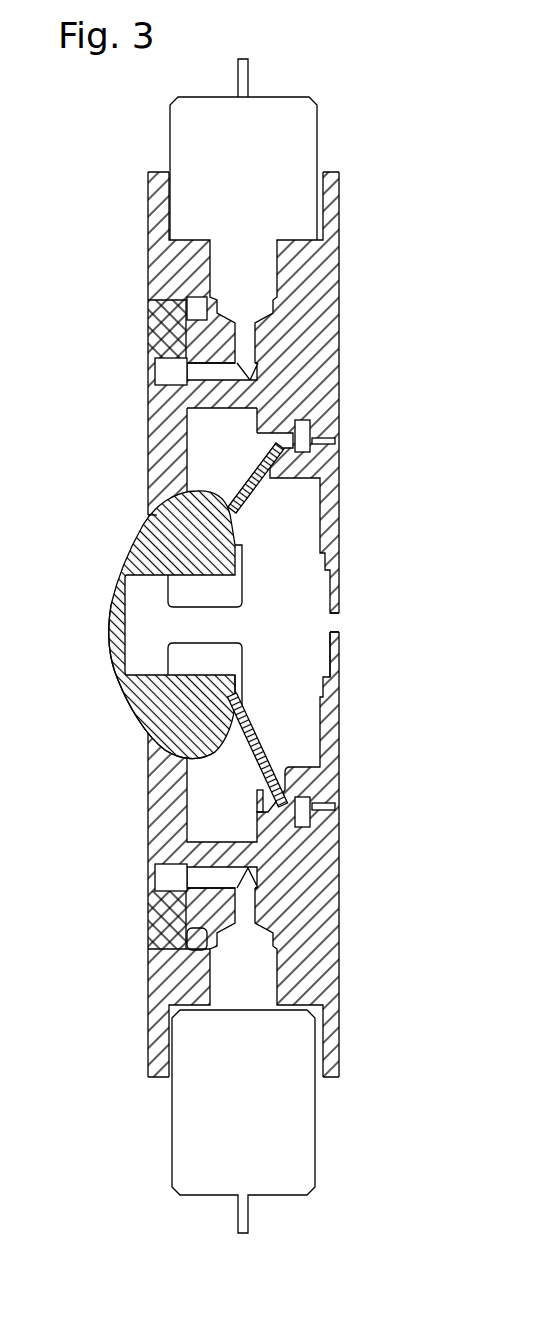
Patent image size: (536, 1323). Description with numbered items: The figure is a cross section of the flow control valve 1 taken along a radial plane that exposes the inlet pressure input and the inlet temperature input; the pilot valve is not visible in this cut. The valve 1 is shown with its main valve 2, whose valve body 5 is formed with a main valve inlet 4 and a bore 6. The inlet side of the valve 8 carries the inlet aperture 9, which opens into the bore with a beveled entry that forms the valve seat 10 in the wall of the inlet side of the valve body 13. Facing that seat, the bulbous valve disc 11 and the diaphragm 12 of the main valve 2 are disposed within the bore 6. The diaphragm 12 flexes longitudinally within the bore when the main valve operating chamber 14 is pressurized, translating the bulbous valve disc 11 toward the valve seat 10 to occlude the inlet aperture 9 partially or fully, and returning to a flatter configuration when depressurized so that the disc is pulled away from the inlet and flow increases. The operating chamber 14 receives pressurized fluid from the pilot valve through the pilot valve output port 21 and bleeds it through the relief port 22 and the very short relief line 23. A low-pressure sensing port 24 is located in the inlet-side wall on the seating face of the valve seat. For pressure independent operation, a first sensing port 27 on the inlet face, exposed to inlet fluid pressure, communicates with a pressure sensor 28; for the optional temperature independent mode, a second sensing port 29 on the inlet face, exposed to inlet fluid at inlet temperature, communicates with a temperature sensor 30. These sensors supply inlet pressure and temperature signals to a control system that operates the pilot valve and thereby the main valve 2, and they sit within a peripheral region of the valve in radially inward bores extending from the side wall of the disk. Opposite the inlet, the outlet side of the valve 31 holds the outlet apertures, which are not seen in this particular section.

The flow control valve 1 is at (128, 125).
The main valve 2 is at (352, 414).
The main valve inlet 4 is at (117, 537).
The valve body 5 is at (148, 262).
The bore 6 is at (215, 462).
The inlet side of the valve 8 is at (145, 452).
The inlet aperture 9 is at (142, 732).
The valve seat 10 is at (195, 760).
The bulbous valve disc 11 is at (135, 700).
The diaphragm 12 is at (252, 500).
The wall of the inlet side of the valve body 13 is at (148, 334).
The main valve operating chamber 14 is at (273, 538).
The pilot valve output port 21 is at (306, 760).
The relief port 22 is at (315, 632).
The relief line 23 is at (348, 622).
The low-pressure sensing port 24 is at (157, 505).
The first sensing port 27 is at (148, 377).
The pressure sensor 28 is at (175, 145).
The second sensing port 29 is at (140, 877).
The temperature sensor 30 is at (172, 1110).
The outlet side of the valve 31 is at (348, 377).